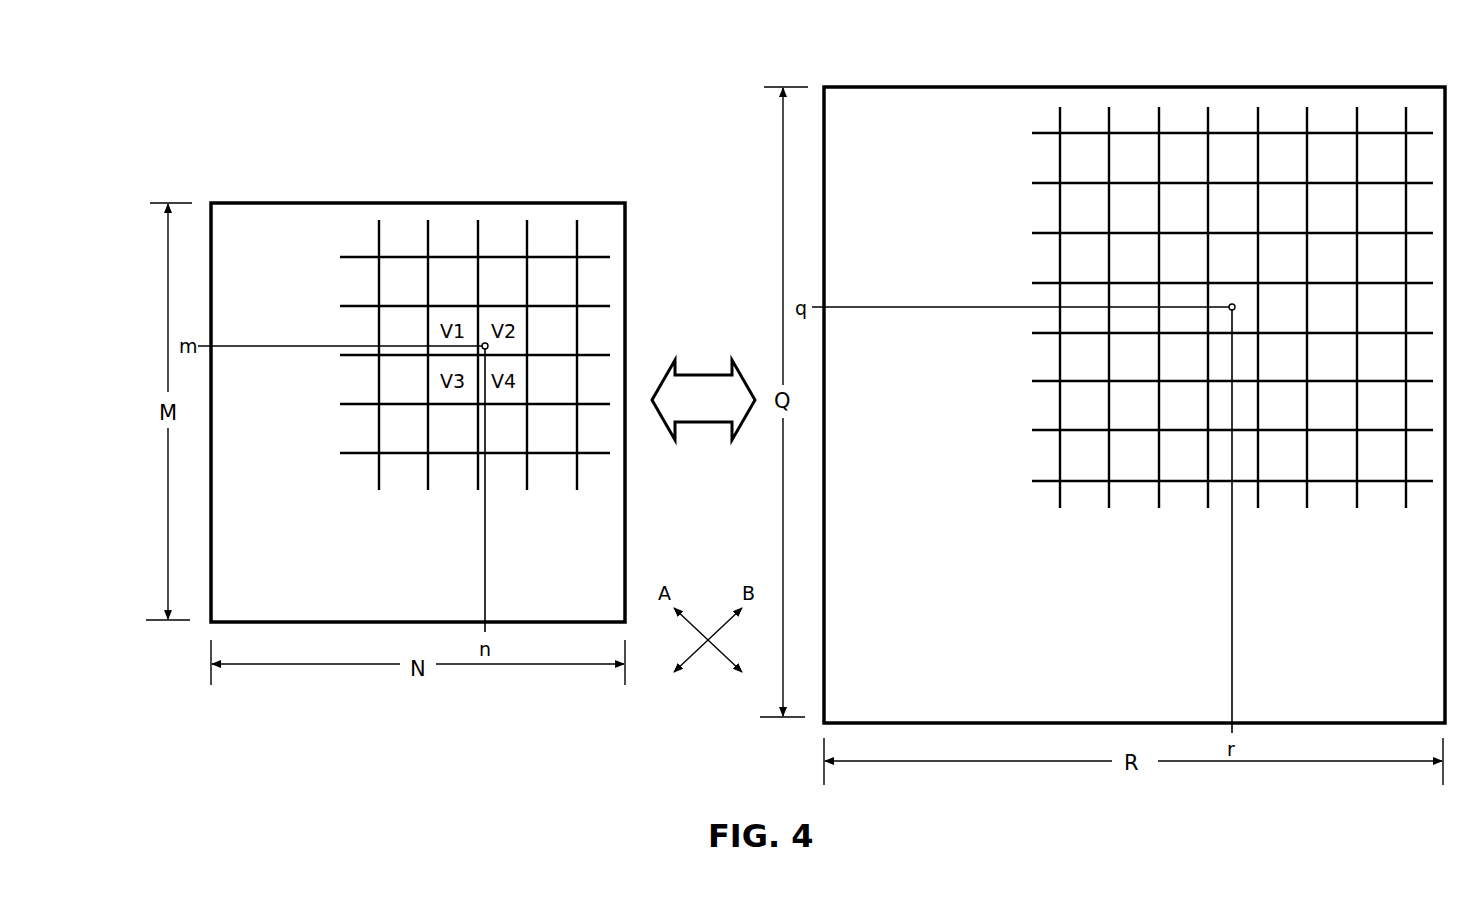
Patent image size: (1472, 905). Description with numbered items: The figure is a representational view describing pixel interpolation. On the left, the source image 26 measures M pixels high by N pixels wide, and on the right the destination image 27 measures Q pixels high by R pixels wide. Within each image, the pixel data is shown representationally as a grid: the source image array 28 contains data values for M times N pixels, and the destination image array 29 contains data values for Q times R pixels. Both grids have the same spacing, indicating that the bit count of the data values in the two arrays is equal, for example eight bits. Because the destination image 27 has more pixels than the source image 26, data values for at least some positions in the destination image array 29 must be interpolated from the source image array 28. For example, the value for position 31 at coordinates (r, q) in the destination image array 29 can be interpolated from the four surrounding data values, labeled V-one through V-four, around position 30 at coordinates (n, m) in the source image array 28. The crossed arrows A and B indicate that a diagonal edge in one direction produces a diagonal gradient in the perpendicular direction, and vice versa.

The source image 26 is at (279, 203).
The destination image 27 is at (885, 87).
The source image array 28 is at (362, 240).
The destination image array 29 is at (1045, 114).
The position in source image array 30 is at (486, 340).
The position in destination image array 31 is at (1233, 302).